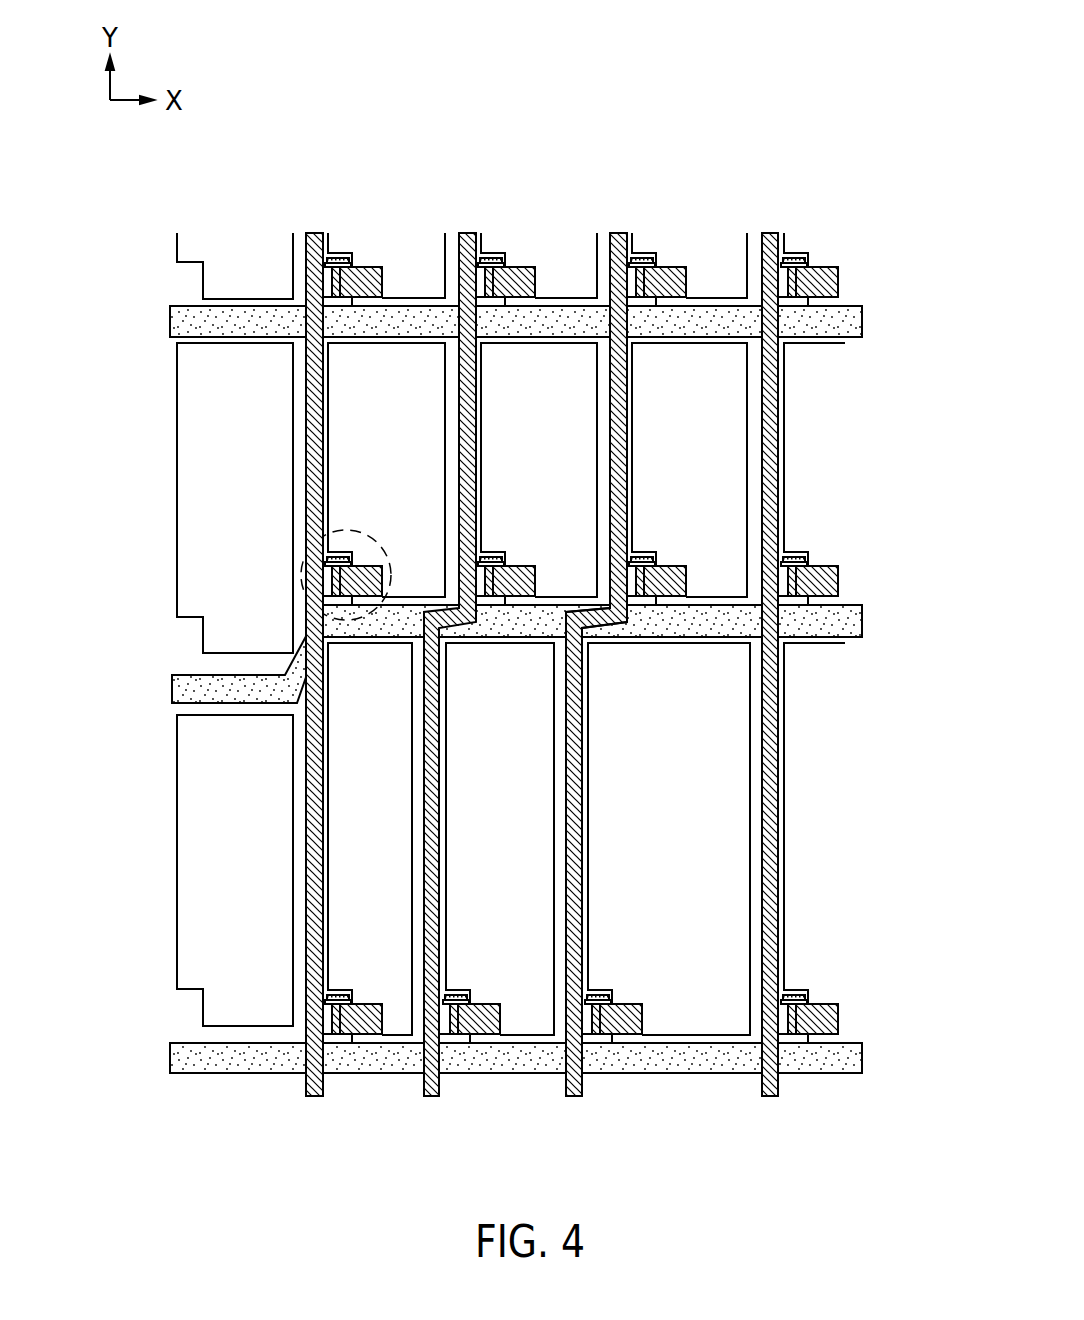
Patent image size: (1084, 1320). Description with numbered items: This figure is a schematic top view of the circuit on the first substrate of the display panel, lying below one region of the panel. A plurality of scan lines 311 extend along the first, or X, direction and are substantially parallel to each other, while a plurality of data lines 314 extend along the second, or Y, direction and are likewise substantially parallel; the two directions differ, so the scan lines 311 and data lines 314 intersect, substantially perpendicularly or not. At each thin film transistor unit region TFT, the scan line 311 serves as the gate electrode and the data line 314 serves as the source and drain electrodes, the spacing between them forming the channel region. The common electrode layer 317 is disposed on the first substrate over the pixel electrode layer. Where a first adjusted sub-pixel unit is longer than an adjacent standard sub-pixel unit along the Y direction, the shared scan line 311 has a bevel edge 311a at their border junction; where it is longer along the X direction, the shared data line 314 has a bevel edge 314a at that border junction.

The scan line 311 is at (858, 620).
The bevel edge 311a is at (300, 708).
The data line 314 is at (770, 803).
The bevel edge 314a is at (610, 613).
The common electrode layer 317 is at (737, 457).
The thin film transistor unit region TFT is at (300, 553).